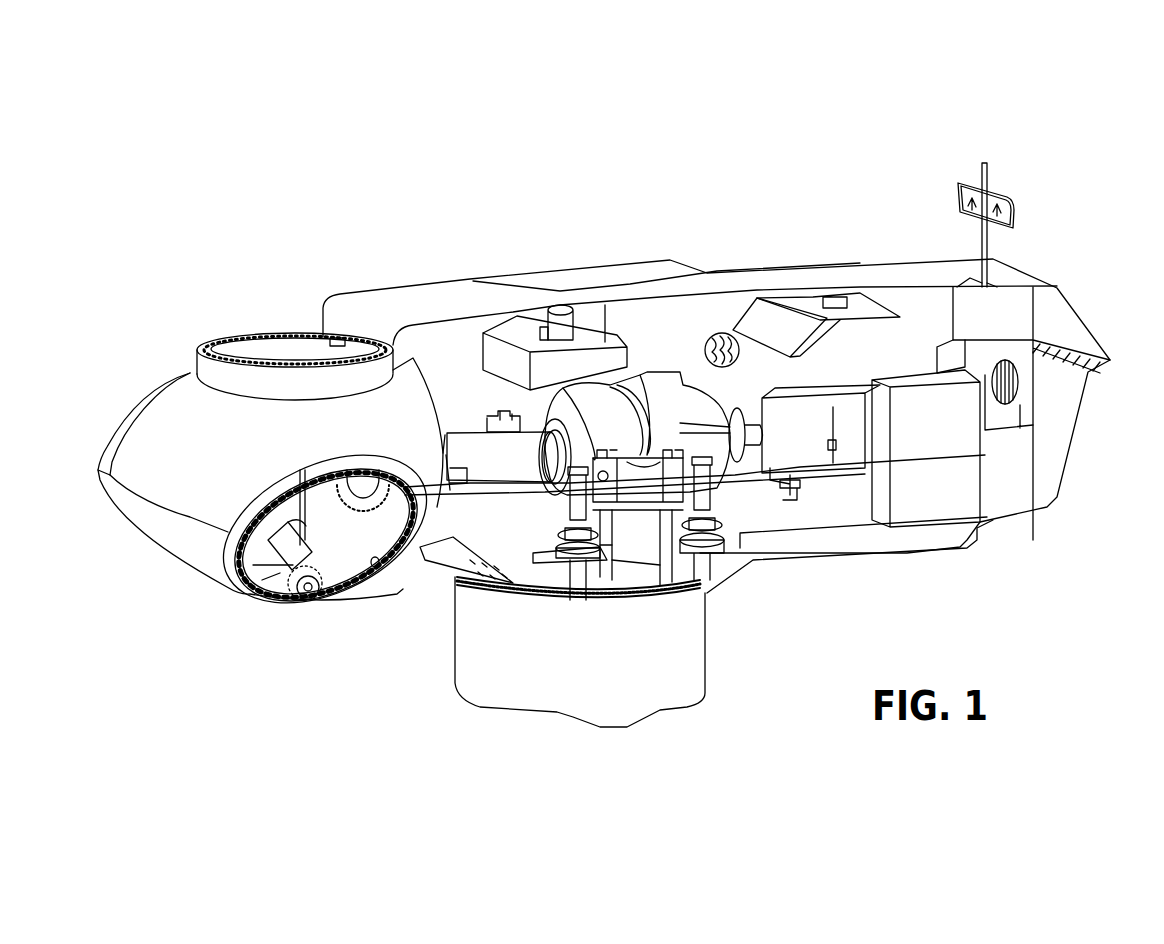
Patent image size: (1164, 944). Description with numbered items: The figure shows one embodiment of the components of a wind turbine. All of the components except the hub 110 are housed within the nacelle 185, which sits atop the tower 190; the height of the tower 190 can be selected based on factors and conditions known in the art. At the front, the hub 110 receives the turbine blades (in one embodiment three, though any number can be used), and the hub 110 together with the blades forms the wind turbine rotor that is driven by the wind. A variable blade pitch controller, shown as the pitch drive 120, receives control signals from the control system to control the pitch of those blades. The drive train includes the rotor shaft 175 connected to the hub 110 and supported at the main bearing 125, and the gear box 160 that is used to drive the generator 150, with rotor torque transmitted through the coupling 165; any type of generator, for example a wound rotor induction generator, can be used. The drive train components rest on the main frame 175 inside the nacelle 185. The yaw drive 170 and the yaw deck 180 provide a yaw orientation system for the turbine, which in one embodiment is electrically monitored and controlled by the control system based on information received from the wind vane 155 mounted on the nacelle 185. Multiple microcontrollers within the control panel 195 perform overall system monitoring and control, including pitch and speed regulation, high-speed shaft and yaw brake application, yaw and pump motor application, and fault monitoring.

The hub 110 is at (243, 392).
The variable blade pitch controller 120 is at (283, 602).
The main bearing 125 is at (448, 470).
The generator 150 is at (806, 462).
The wind vane 155 is at (1013, 202).
The gear box 160 is at (641, 410).
The coupling 165 is at (735, 410).
The yaw drive 170 is at (575, 585).
The rotor shaft 175 is at (930, 597).
The yaw deck 180 is at (740, 560).
The nacelle 185 is at (389, 307).
The tower 190 is at (674, 693).
The control panel 195 is at (917, 403).